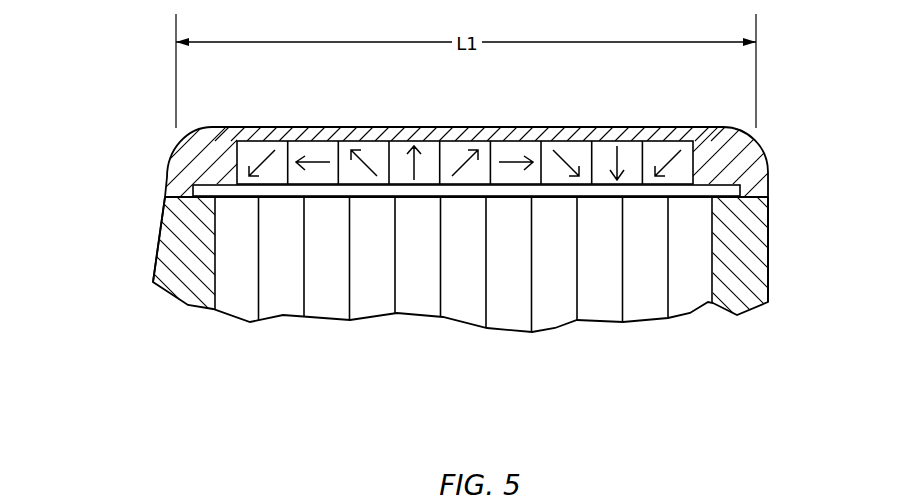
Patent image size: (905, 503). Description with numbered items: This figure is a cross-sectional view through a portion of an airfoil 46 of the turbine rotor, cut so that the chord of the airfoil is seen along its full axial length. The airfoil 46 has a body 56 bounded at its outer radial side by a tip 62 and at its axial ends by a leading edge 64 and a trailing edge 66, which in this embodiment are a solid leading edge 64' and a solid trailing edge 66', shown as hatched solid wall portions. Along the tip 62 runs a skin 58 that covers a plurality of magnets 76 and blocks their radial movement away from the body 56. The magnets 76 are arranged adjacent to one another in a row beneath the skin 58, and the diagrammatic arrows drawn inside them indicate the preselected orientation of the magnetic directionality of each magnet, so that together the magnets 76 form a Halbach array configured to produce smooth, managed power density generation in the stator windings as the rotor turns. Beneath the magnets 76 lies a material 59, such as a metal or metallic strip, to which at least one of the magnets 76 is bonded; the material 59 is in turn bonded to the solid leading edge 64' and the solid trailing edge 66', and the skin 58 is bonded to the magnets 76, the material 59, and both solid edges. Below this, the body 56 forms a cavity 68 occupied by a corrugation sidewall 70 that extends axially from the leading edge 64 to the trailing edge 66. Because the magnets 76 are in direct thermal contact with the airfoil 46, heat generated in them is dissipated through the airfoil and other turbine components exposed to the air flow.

The airfoil 46 is at (102, 128).
The body 56 is at (88, 173).
The skin 58 is at (752, 152).
The material 59 is at (215, 157).
The tip 62 is at (772, 162).
The leading edge 64 is at (125, 233).
The solid leading edge 64' is at (185, 255).
The trailing edge 66 is at (805, 249).
The solid trailing edge 66' is at (735, 255).
The cavity 68 is at (237, 290).
The corrugation sidewall 70 is at (262, 268).
The magnets 76 is at (200, 176).